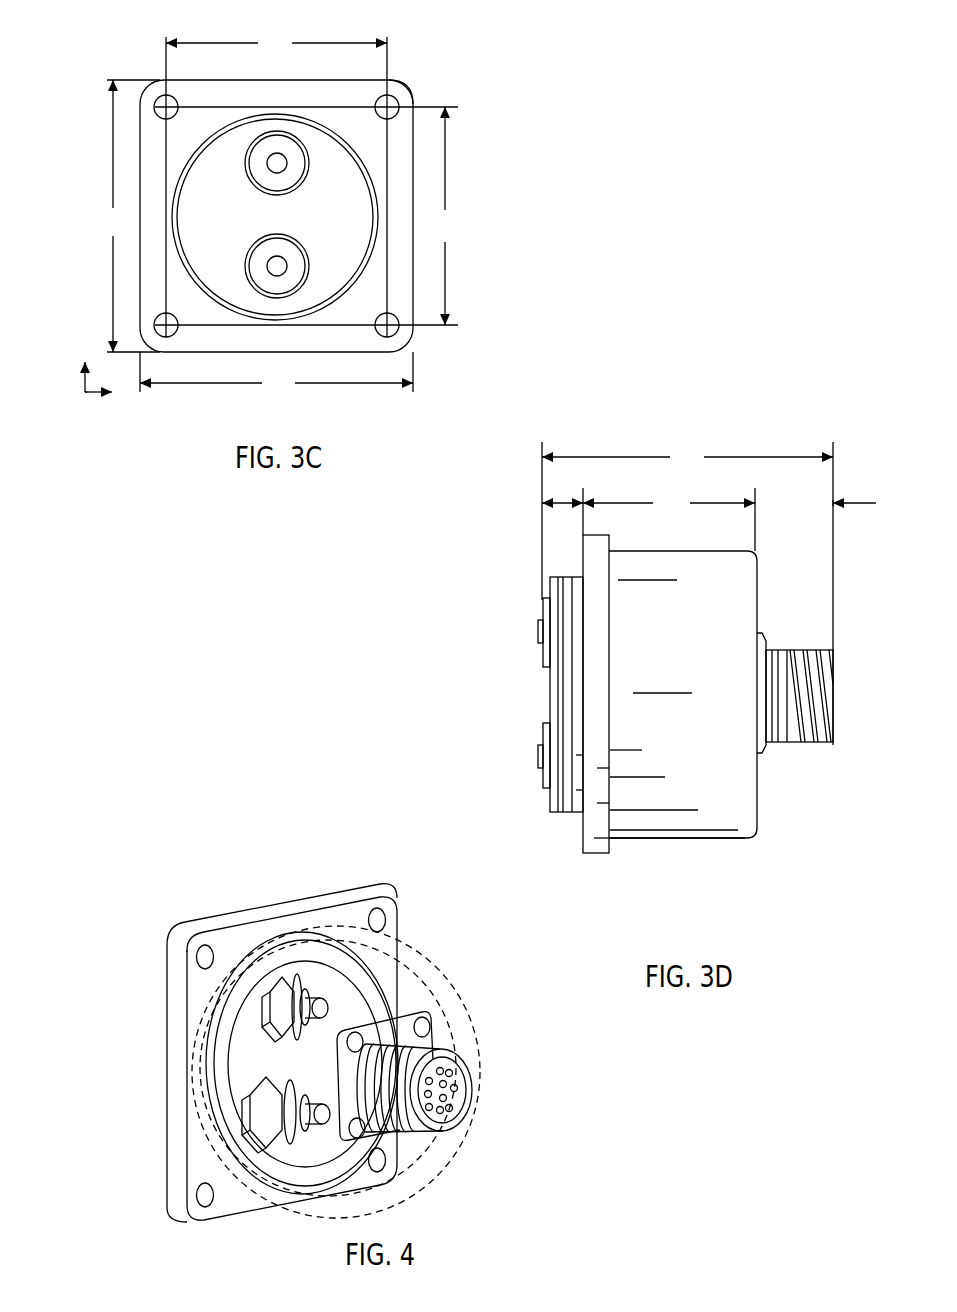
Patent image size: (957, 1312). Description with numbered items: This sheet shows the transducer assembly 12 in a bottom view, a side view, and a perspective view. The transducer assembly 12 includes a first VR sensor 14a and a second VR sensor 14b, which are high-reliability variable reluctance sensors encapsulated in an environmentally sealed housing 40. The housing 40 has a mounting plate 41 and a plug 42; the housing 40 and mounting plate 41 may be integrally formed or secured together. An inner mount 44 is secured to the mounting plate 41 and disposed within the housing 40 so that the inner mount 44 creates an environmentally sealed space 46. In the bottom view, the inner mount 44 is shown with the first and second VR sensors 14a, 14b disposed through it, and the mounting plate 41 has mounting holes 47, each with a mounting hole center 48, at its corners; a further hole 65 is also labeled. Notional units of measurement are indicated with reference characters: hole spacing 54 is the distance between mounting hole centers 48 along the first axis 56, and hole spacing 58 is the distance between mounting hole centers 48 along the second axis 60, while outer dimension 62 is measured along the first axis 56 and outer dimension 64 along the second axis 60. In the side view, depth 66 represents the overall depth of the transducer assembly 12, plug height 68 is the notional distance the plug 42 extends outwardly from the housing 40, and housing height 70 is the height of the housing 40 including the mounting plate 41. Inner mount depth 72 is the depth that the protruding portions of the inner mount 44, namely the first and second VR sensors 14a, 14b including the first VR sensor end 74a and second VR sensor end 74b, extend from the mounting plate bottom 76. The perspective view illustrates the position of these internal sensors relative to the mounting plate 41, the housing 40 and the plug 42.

In FIG. 3C, the transducer assembly 12 is at (108, 61).
In FIG. 3D, the transducer assembly 12 is at (856, 497).
In FIG. 4, the transducer assembly 12 is at (136, 928).
In FIG. 3C, the first VR sensor 14a is at (288, 266).
In FIG. 3D, the first VR sensor 14a is at (543, 738).
In FIG. 4, the first VR sensor 14a is at (272, 1113).
In FIG. 3C, the second VR sensor 14b is at (288, 181).
In FIG. 3D, the second VR sensor 14b is at (543, 658).
In FIG. 4, the second VR sensor 14b is at (285, 1030).
In FIG. 3D, the housing 40 is at (745, 840).
In FIG. 4, the housing 40 is at (447, 963).
In FIG. 3D, the mounting plate 41 is at (610, 844).
In FIG. 4, the mounting plate 41 is at (188, 1173).
In FIG. 3D, the plug 42 is at (837, 698).
In FIG. 4, the plug 42 is at (470, 1046).
In FIG. 3C, the inner mount 44 is at (317, 242).
In FIG. 3D, the inner mount 44 is at (548, 697).
In FIG. 4, the environmentally sealed space 46 is at (388, 918).
In FIG. 3C, the mounting hole 47 is at (387, 103).
In FIG. 3C, the mounting hole center 48 is at (388, 108).
In FIG. 3C, the hole spacing 54 is at (276, 43).
In FIG. 3C, the first axis 56 is at (88, 394).
In FIG. 3C, the hole spacing 58 is at (448, 216).
In FIG. 3C, the second axis 60 is at (84, 378).
In FIG. 3C, the outer dimension 62 is at (276, 383).
In FIG. 3C, the outer dimension 64 is at (116, 216).
In FIG. 3C, the mounting hole 65 is at (390, 328).
In FIG. 3D, the depth 66 is at (687, 458).
In FIG. 3D, the plug height 68 is at (830, 503).
In FIG. 3D, the housing height 70 is at (669, 503).
In FIG. 3D, the inner mount depth 72 is at (548, 503).
In FIG. 3C, the first VR sensor end 74a is at (277, 266).
In FIG. 3D, the first VR sensor end 74a is at (540, 786).
In FIG. 3C, the second VR sensor end 74b is at (278, 162).
In FIG. 3D, the second VR sensor end 74b is at (538, 628).
In FIG. 3C, the mounting plate bottom 76 is at (187, 130).
In FIG. 3D, the mounting plate bottom 76 is at (582, 850).
In FIG. 4, the mounting plate bottom 76 is at (170, 981).